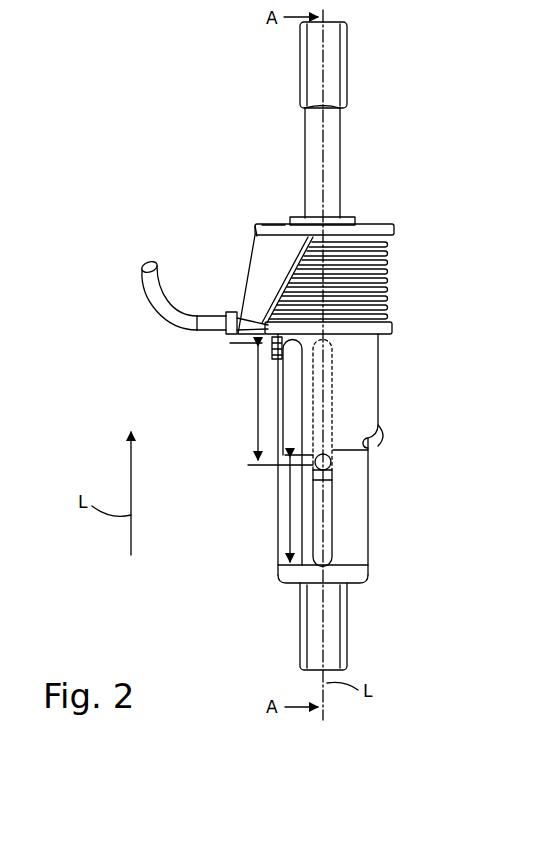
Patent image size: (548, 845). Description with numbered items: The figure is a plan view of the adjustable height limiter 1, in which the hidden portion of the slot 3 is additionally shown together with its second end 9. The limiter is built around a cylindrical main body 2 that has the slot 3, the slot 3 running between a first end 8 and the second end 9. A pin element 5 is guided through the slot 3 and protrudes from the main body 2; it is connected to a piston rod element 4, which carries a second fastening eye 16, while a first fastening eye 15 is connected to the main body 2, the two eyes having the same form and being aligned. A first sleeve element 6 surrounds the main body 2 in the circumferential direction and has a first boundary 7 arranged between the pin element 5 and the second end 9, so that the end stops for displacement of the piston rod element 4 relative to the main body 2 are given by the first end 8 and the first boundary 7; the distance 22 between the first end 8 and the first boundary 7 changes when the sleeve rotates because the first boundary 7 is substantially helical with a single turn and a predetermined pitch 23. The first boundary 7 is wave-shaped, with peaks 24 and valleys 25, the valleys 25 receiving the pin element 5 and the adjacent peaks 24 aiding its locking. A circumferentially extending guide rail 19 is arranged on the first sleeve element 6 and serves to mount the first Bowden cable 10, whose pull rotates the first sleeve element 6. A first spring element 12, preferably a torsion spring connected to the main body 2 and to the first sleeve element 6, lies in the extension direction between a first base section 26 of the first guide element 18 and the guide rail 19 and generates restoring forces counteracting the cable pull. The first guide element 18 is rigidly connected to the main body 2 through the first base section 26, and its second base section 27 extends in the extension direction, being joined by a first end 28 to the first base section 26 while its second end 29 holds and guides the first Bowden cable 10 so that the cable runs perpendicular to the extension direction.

The adjustable height limiter 1 is at (154, 100).
The main body 2 is at (278, 488).
The slot 3 is at (332, 515).
The piston rod element 4 is at (333, 133).
The pin element 5 is at (335, 470).
The first sleeve element 6 is at (370, 378).
The first boundary 7 is at (335, 465).
The first end 8 is at (368, 566).
The second end 9 is at (330, 357).
The first Bowden cable 10 is at (210, 316).
The first spring element 12 is at (392, 263).
The first fastening eye 15 is at (333, 628).
The second fastening eye 16 is at (340, 55).
The first guide element 18 is at (253, 262).
The guide rail 19 is at (393, 321).
The distance 22 is at (290, 520).
The pitch 23 is at (257, 405).
The peaks 24 is at (380, 440).
The valleys 25 is at (362, 437).
The first base section 26 is at (363, 225).
The second base section 27 is at (254, 236).
The first end 28 is at (277, 224).
The second end 29 is at (237, 337).